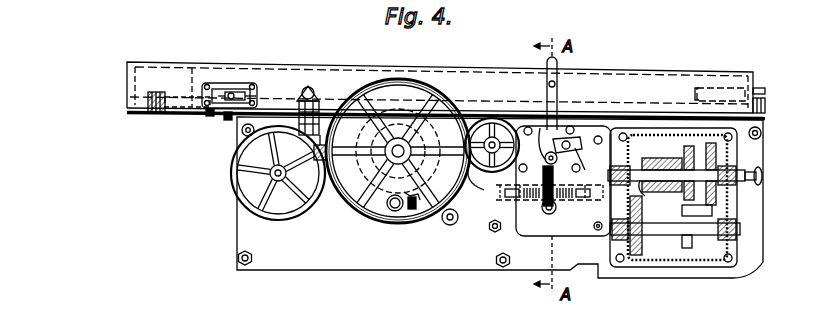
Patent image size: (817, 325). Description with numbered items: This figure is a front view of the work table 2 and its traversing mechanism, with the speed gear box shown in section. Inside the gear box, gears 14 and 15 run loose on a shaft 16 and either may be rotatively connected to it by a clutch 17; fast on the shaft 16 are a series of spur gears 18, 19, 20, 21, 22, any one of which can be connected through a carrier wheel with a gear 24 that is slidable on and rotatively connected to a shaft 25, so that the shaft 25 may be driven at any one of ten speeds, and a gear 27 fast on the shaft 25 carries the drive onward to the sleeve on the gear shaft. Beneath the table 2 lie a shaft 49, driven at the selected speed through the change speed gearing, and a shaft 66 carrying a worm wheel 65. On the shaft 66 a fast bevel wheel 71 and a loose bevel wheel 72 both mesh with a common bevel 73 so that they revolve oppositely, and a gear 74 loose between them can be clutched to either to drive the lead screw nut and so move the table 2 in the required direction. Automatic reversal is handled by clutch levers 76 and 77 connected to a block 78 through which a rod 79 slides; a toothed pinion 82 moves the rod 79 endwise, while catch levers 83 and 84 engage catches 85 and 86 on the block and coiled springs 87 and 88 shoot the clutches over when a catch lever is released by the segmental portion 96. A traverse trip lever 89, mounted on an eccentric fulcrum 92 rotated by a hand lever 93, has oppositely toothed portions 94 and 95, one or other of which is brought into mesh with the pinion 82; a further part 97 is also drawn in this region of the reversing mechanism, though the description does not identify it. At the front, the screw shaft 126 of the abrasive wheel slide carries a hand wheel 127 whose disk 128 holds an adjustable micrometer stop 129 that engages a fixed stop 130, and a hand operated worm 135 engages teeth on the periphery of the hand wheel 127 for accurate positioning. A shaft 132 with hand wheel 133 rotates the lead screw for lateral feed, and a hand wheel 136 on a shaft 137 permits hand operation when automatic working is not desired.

The work table 2 is at (172, 63).
The gear 14 is at (736, 163).
The gear 15 is at (714, 151).
The shaft 16 is at (750, 184).
The clutch 17 is at (682, 196).
The spur gear 18 is at (698, 171).
The spur gear 19 is at (686, 162).
The spur gear 20 is at (668, 160).
The spur gear 21 is at (664, 163).
The spur gear 22 is at (640, 158).
The gear 24 is at (690, 222).
The shaft 25 is at (658, 232).
The gear 27 is at (642, 215).
The shaft 49 is at (708, 88).
The worm wheel 65 is at (152, 112).
The shaft 66 is at (180, 108).
The bevel wheel 71 is at (258, 91).
The bevel wheel 72 is at (210, 116).
The common bevel 73 is at (238, 83).
The gear 74 is at (228, 120).
The clutch lever 76 is at (580, 168).
The clutch lever 77 is at (545, 192).
The block 78 is at (572, 232).
The rod 79 is at (494, 230).
The toothed pinion 82 is at (492, 192).
The catch lever 83 is at (585, 197).
The catch lever 84 is at (500, 196).
The catch 85 is at (590, 198).
The catch 86 is at (492, 208).
The coiled spring 87 is at (546, 200).
The spring 88 is at (571, 200).
The traverse trip lever 89 is at (557, 93).
The eccentric fulcrum 92 is at (568, 138).
The hand lever 93 is at (580, 140).
The toothed portion 94 is at (540, 128).
The toothed portion 95 is at (560, 150).
The segmental portion 96 is at (520, 198).
The roller 97 is at (547, 215).
The screw shaft 126 is at (386, 172).
The hand wheel 127 is at (371, 205).
The disk 128 is at (340, 193).
The adjustable micrometer stop 129 is at (414, 210).
The fixed stop 130 is at (394, 212).
The shaft 132 is at (484, 128).
The hand wheel 133 is at (496, 118).
The hand operated worm 135 is at (306, 147).
The hand wheel 136 is at (260, 183).
The shaft 137 is at (277, 182).